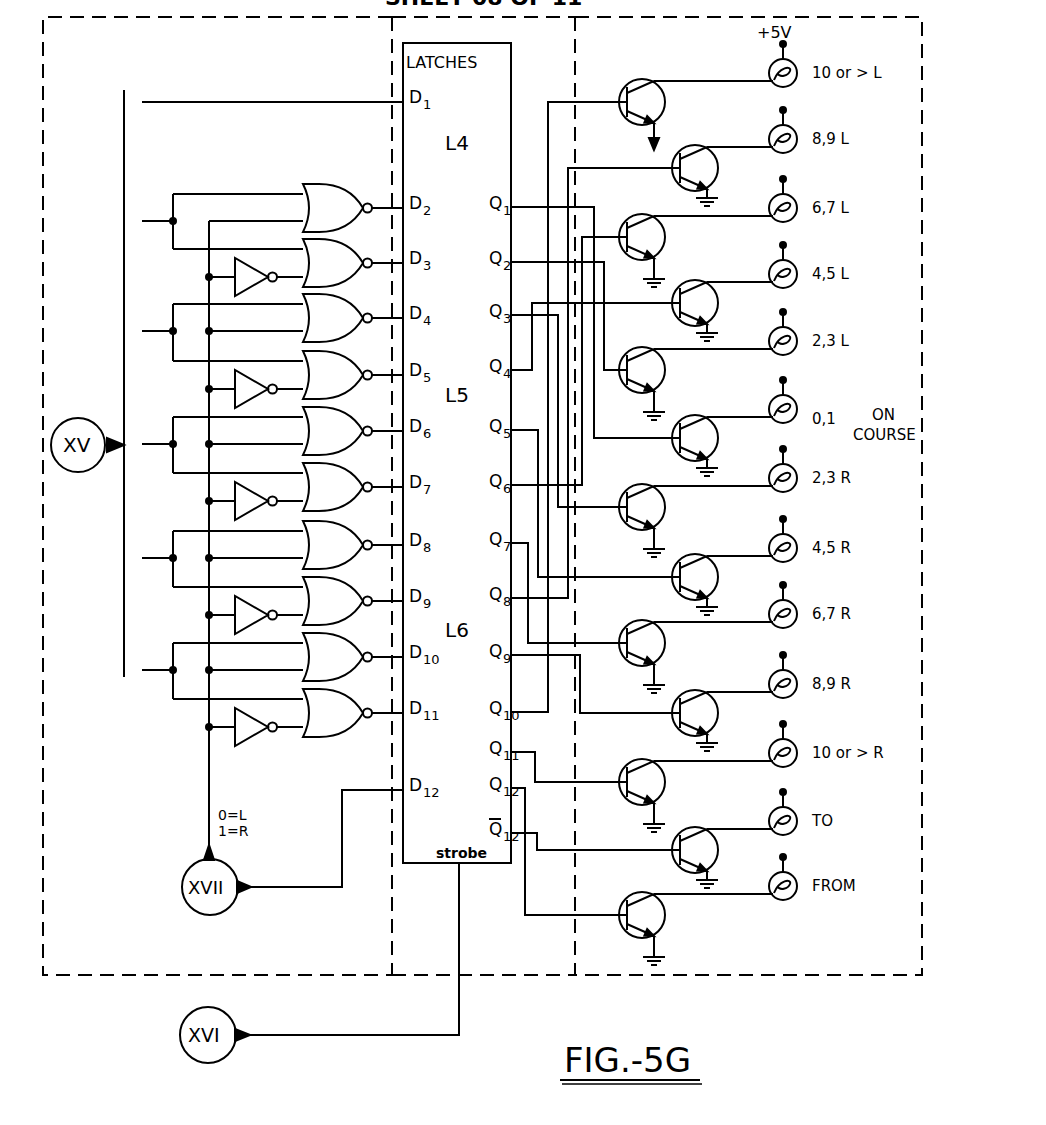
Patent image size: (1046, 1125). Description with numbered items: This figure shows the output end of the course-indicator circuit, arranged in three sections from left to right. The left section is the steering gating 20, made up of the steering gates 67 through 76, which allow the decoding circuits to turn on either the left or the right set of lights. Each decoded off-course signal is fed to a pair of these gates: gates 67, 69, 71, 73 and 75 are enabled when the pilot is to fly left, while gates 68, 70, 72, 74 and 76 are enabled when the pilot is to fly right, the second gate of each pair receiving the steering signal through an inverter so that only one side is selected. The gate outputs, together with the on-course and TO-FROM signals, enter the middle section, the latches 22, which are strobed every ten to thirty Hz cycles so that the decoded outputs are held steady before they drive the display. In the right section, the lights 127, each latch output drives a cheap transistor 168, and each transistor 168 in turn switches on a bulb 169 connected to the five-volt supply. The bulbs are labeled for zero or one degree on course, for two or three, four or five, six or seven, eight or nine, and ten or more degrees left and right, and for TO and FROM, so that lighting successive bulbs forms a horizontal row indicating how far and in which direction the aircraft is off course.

The steering gating 20 is at (203, 20).
The latches 22 is at (505, 21).
The lights 127 is at (625, 21).
The steering gate 67 is at (353, 208).
The steering gate 68 is at (353, 263).
The steering gate 69 is at (353, 318).
The steering gate 70 is at (353, 375).
The steering gate 71 is at (353, 431).
The steering gate 72 is at (353, 487).
The steering gate 73 is at (353, 545).
The steering gate 74 is at (353, 601).
The steering gate 75 is at (353, 657).
The steering gate 76 is at (353, 713).
The transistor 168 is at (666, 95).
The bulb 169 is at (779, 85).